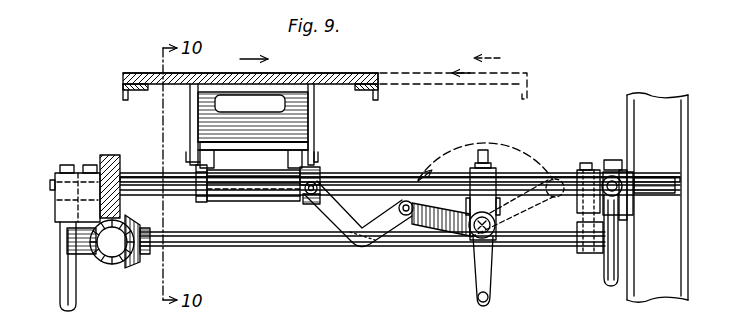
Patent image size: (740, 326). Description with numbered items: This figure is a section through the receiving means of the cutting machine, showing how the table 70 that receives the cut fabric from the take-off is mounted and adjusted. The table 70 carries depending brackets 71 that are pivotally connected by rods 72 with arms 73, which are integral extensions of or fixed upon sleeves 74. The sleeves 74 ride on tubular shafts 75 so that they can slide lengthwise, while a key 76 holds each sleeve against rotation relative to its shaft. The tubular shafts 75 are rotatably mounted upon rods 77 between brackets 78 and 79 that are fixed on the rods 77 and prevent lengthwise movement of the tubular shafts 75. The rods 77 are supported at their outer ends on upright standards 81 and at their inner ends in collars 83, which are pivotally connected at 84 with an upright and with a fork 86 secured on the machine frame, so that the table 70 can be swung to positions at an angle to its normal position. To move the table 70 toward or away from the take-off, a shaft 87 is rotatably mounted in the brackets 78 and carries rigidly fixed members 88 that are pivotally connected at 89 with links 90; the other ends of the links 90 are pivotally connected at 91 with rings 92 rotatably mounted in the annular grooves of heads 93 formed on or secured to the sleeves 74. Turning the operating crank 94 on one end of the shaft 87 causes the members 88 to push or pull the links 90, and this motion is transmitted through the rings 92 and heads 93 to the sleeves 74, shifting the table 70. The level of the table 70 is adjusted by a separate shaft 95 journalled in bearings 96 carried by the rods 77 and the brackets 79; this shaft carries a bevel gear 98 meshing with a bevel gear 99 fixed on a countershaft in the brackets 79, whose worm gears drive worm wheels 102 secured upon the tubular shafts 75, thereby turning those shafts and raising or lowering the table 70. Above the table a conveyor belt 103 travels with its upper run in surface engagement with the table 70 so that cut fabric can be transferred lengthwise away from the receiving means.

The table 70 is at (374, 73).
The depending brackets 71 is at (314, 120).
The rods 72 is at (262, 148).
The arms 73 is at (206, 167).
The sleeves 74 is at (244, 198).
The tubular shafts 75 is at (371, 178).
The key 76 is at (396, 186).
The rods 77 is at (546, 182).
The brackets 78 is at (488, 172).
The brackets 79 is at (80, 168).
The upright standards 81 is at (66, 277).
The collars 83 is at (620, 192).
The pivotal connection 84 is at (604, 164).
The fork 86 is at (624, 168).
The shaft 87 is at (474, 236).
The members 88 is at (440, 223).
The pivotal connection 89 is at (408, 218).
The links 90 is at (364, 239).
The pivotal connection 91 is at (320, 200).
The rings 92 is at (313, 196).
The heads 93 is at (318, 171).
The operating crank 94 is at (490, 267).
The shaft 95 is at (545, 243).
The bearings 96 is at (590, 251).
The bevel gear 98 is at (134, 265).
The bevel gear 99 is at (106, 265).
The worm wheels 102 is at (118, 159).
The conveyor belt 103 is at (147, 72).